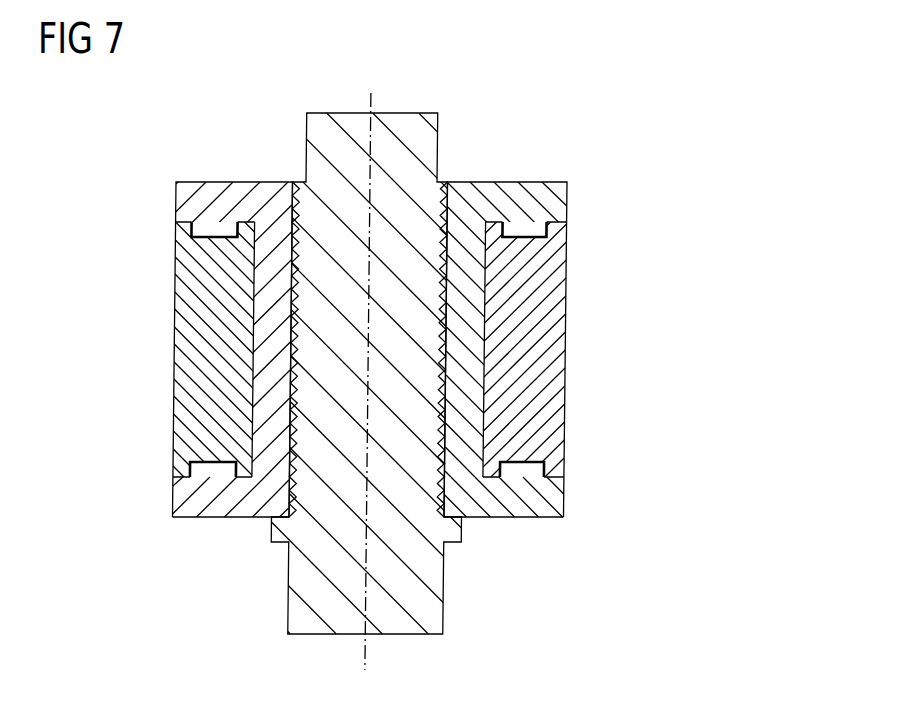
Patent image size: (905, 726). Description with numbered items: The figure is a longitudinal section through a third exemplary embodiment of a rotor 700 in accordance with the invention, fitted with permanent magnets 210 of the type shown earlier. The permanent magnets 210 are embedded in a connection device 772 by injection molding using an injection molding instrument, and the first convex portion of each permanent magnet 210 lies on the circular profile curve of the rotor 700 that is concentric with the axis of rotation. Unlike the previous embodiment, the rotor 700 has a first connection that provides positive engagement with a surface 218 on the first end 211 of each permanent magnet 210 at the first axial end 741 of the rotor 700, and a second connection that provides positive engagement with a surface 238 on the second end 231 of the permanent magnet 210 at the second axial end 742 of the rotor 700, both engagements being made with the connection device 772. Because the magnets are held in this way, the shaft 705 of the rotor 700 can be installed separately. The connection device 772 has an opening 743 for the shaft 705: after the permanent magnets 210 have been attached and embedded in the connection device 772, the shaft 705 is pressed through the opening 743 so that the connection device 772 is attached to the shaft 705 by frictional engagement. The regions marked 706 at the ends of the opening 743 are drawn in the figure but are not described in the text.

The rotor 700 is at (355, 90).
The shaft 705 is at (393, 622).
The thread end region 706 is at (292, 493).
The opening 743 is at (284, 168).
The permanent magnet 210 is at (175, 303).
The first end 211 is at (136, 222).
The surface 218 is at (225, 220).
The surface 238 is at (224, 477).
The second end 231 is at (132, 480).
The first axial end 741 is at (611, 166).
The second axial end 742 is at (609, 508).
The connection device 772 is at (208, 553).